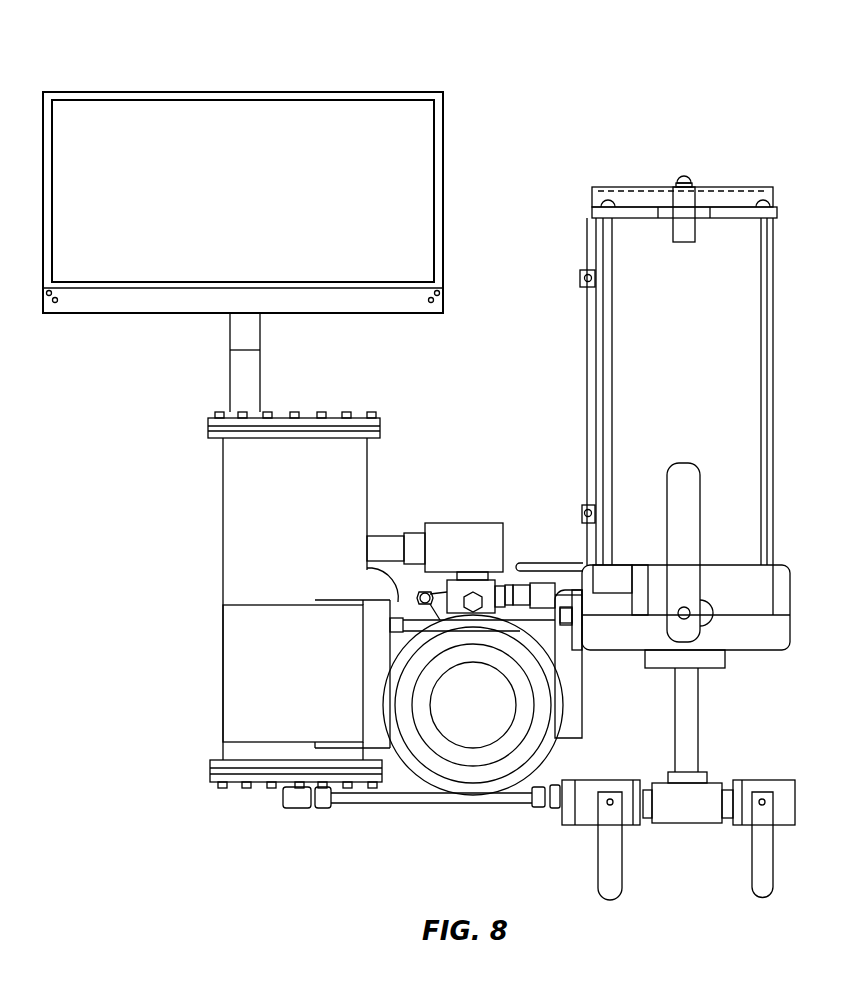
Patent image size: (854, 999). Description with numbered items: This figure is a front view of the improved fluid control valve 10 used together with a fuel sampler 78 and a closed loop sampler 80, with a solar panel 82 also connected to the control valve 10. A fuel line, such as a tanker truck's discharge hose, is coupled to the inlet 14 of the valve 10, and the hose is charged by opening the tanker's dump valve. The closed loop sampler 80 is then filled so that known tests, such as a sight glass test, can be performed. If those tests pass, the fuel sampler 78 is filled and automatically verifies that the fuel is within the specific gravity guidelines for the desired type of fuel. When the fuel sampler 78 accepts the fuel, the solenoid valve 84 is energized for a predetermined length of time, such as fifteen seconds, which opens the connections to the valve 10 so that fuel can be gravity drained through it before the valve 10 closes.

The fluid control valve 10 is at (445, 818).
The inlet 14 is at (456, 722).
The fuel sampler 78 is at (281, 610).
The closed loop sampler 80 is at (735, 400).
The solar panel 82 is at (243, 252).
The solenoid valve 84 is at (478, 535).